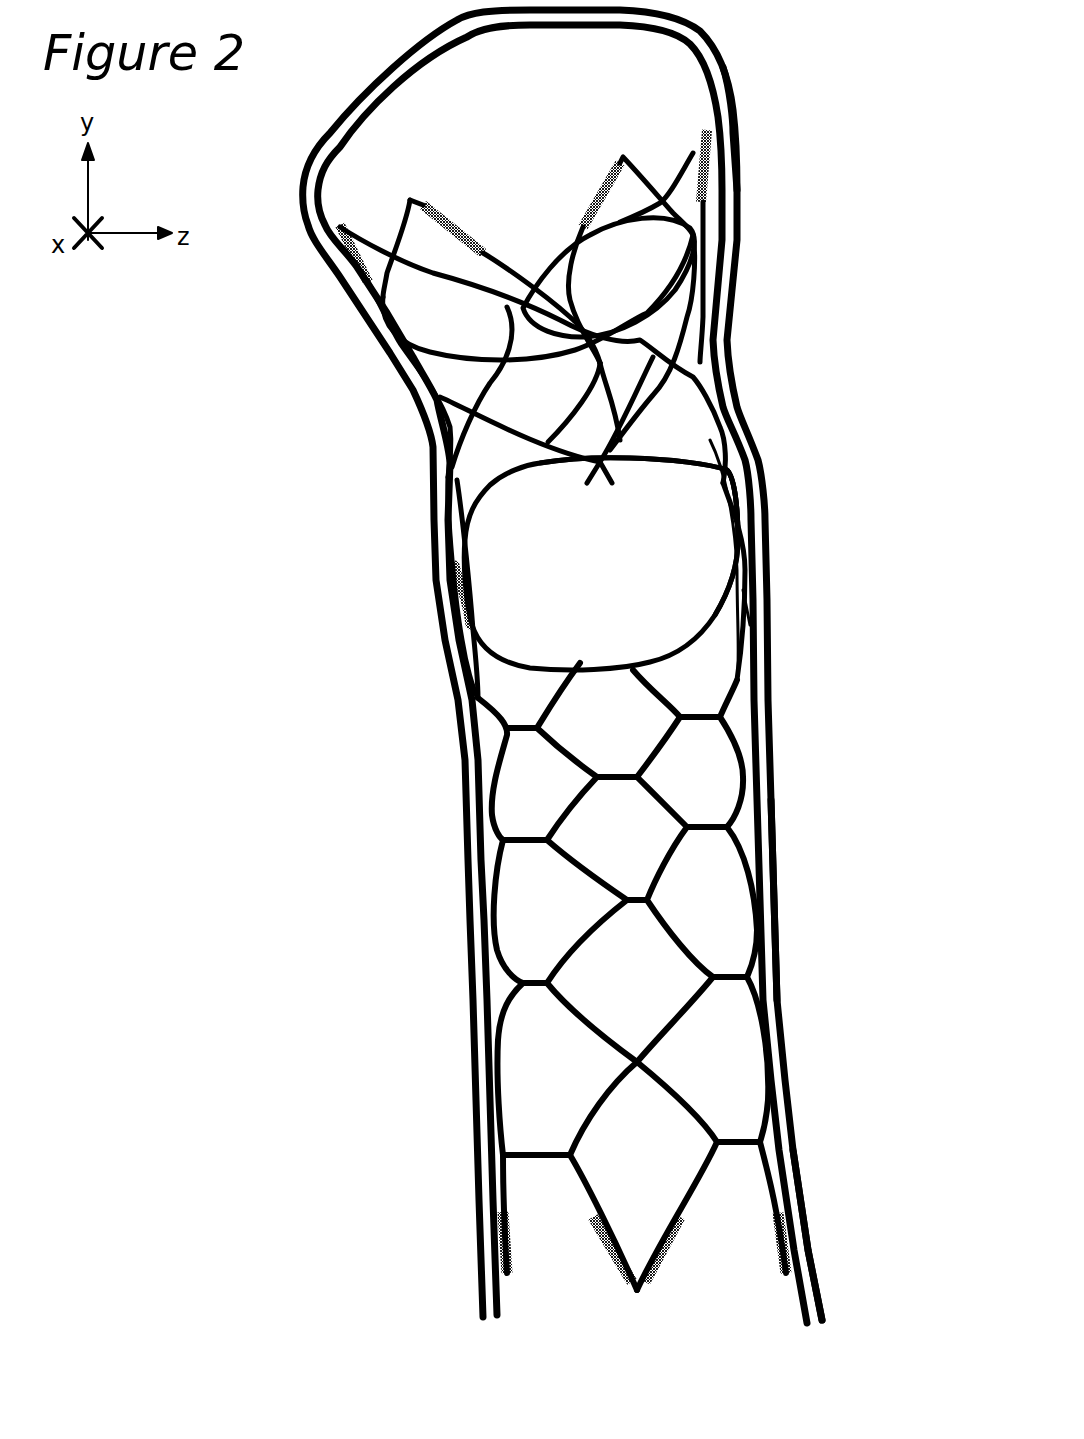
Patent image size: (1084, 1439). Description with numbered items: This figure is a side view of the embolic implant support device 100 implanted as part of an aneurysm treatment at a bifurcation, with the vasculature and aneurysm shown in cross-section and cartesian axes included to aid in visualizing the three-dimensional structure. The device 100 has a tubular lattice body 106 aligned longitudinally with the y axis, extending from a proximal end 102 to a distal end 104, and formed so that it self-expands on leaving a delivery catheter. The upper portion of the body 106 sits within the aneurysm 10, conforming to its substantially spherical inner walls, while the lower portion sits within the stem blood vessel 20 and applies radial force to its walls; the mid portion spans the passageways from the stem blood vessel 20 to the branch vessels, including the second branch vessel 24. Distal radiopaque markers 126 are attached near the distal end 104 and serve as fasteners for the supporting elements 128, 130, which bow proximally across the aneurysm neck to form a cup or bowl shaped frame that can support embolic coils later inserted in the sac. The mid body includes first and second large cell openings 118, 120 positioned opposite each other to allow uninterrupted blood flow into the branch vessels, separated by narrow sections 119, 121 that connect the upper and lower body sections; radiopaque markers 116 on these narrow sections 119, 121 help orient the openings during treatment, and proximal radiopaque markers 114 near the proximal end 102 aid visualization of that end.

The aneurysm 10 is at (730, 93).
The stem blood vessel 20 is at (773, 917).
The second branch vessel 24 is at (616, 573).
The embolic implant support device 100 is at (382, 249).
The proximal end 102 is at (777, 1273).
The distal end 104 is at (727, 147).
The body 106 is at (490, 867).
The proximal radiopaque markers 114 is at (610, 1267).
The radiopaque markers 116 is at (447, 560).
The first large cell opening 118 is at (700, 527).
The narrow section 119 is at (463, 607).
The second large cell opening 120 is at (732, 505).
The narrow section 121 is at (760, 610).
The distal radiopaque markers 126 is at (710, 140).
The supporting element 128 is at (574, 297).
The supporting element 130 is at (667, 293).